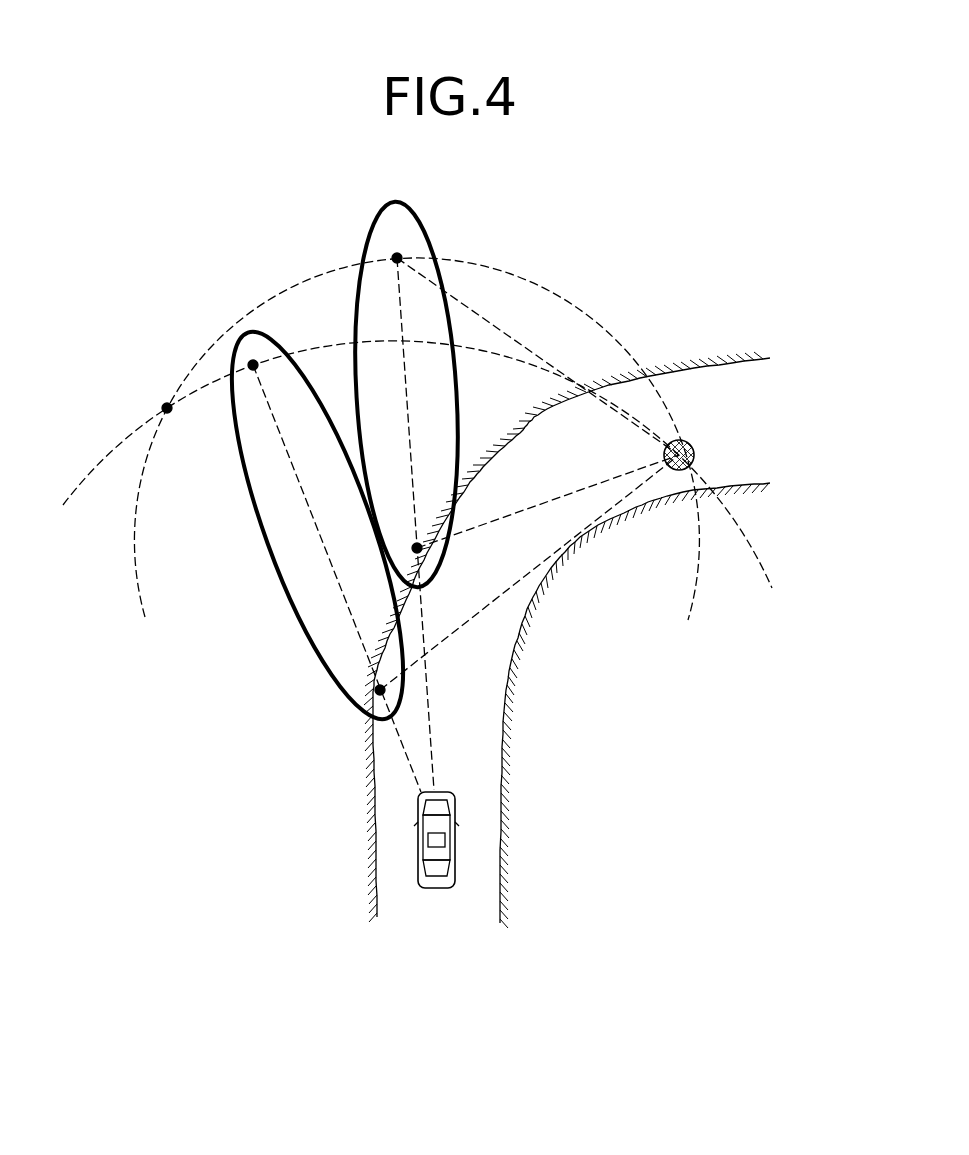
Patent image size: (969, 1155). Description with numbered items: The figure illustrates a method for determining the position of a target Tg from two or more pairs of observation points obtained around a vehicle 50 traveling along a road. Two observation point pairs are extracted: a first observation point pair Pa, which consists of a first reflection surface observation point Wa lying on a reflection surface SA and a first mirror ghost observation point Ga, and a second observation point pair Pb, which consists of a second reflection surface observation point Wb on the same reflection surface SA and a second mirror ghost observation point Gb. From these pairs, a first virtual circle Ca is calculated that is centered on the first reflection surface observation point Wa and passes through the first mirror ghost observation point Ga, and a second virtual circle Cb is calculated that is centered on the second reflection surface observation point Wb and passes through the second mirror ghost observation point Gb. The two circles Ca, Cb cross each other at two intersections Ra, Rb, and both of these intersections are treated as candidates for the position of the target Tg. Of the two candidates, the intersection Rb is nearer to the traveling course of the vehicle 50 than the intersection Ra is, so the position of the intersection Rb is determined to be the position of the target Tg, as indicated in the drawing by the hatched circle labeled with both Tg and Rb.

The vehicle 50 is at (437, 888).
The first mirror ghost observation point Ga is at (397, 258).
The second mirror ghost observation point Gb is at (257, 362).
The first observation point pair Pa is at (422, 229).
The second observation point pair Pb is at (235, 350).
The intersection Ra is at (164, 406).
The intersection Rb is at (696, 452).
The first virtual circle Ca is at (533, 283).
The second virtual circle Cb is at (487, 351).
The reflection surface SA is at (462, 487).
The first reflection surface observation point Wa is at (415, 546).
The second reflection surface observation point Wb is at (378, 689).
The target Tg is at (741, 455).